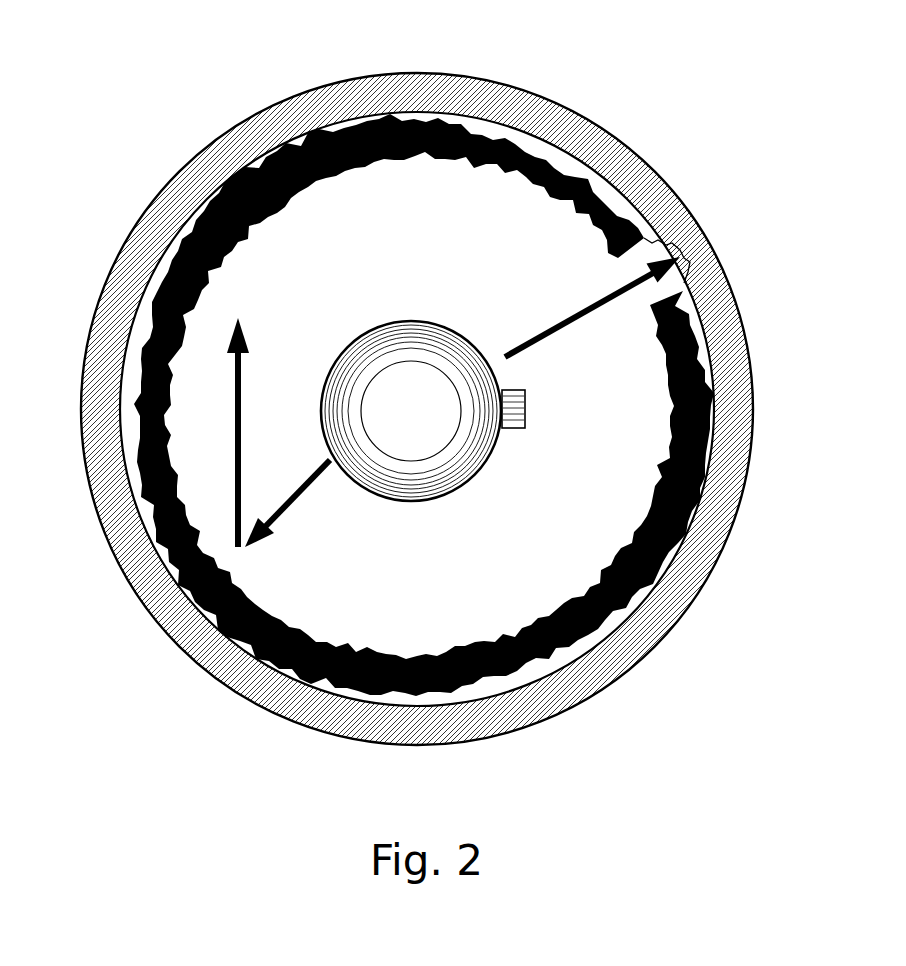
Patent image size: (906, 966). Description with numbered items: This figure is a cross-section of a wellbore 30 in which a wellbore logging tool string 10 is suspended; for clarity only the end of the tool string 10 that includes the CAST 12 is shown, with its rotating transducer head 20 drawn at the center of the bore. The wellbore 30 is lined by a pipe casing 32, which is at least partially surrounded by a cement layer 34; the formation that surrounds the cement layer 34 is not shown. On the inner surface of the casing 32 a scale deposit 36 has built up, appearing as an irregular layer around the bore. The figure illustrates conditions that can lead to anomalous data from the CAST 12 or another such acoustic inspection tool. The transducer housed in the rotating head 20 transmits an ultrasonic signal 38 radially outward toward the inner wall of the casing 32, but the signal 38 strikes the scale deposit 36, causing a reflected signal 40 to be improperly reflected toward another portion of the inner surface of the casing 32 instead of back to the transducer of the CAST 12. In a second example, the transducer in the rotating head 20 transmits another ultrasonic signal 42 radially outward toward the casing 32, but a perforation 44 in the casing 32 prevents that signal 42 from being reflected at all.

The tool string 10 is at (444, 316).
The CAST 12 is at (492, 465).
The rotating transducer head 20 is at (410, 428).
The wellbore 30 is at (540, 84).
The pipe casing 32 is at (128, 452).
The cement layer 34 is at (140, 243).
The scale deposit 36 is at (248, 238).
The ultrasonic signal 38 is at (290, 505).
The reflected signal 40 is at (243, 406).
The ultrasonic signal 42 is at (535, 347).
The perforation 44 is at (650, 243).